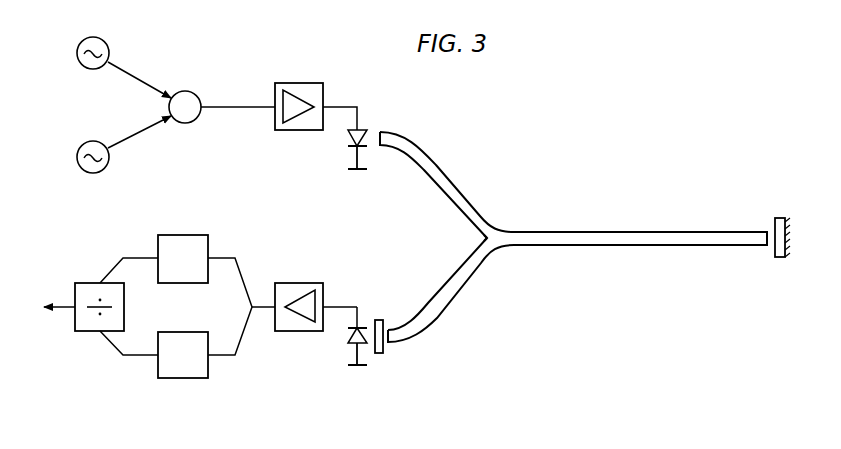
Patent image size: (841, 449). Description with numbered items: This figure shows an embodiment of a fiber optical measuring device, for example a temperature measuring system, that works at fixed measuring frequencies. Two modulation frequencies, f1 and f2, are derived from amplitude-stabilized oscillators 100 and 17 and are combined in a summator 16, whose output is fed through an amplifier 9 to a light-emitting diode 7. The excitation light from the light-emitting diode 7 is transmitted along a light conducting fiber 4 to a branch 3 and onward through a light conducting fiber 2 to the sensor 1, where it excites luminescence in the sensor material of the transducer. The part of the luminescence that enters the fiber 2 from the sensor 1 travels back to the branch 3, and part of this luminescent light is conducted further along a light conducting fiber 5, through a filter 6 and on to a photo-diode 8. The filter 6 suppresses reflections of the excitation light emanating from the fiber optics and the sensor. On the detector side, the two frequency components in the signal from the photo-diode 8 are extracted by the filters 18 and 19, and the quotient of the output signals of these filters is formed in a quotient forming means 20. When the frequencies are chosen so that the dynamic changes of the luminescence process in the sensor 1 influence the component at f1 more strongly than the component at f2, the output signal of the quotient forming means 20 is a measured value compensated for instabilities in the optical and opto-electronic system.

The sensor 1 is at (778, 259).
The light conducting fiber 2 is at (615, 230).
The branch 3 is at (495, 223).
The light conducting fiber 4 is at (446, 168).
The light conducting fiber 5 is at (459, 290).
The filter 6 is at (381, 357).
The light-emitting diode 7 is at (345, 147).
The photo-diode 8 is at (347, 347).
The amplifier 9 is at (311, 82).
The summator 16 is at (197, 94).
The amplitude-stabilized oscillator 17 is at (104, 168).
The filter 18 is at (188, 233).
The filter 19 is at (188, 380).
The quotient forming means 20 is at (92, 333).
The amplitude-stabilized oscillator 100 is at (105, 42).